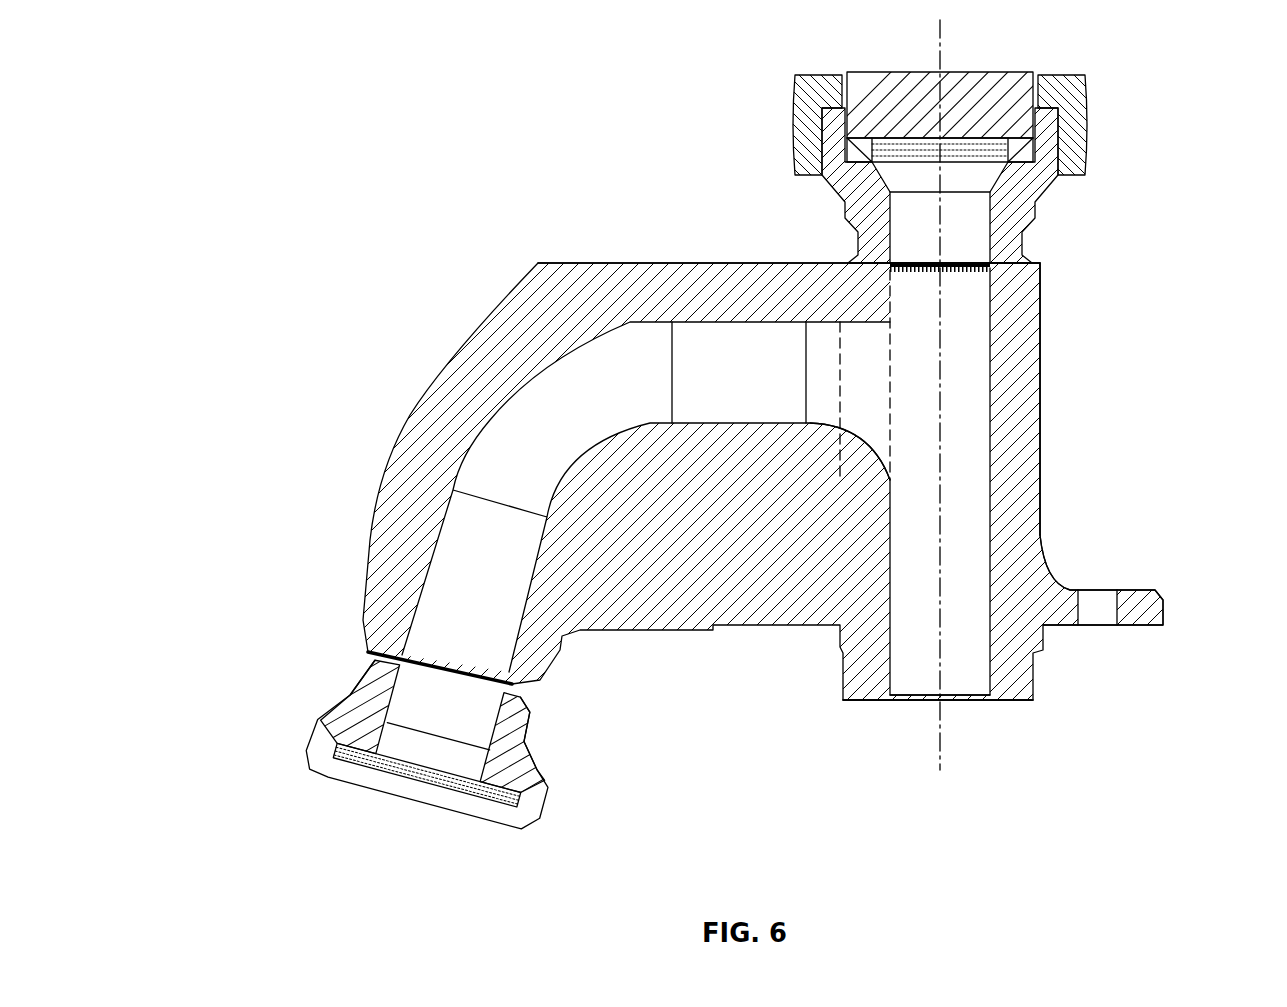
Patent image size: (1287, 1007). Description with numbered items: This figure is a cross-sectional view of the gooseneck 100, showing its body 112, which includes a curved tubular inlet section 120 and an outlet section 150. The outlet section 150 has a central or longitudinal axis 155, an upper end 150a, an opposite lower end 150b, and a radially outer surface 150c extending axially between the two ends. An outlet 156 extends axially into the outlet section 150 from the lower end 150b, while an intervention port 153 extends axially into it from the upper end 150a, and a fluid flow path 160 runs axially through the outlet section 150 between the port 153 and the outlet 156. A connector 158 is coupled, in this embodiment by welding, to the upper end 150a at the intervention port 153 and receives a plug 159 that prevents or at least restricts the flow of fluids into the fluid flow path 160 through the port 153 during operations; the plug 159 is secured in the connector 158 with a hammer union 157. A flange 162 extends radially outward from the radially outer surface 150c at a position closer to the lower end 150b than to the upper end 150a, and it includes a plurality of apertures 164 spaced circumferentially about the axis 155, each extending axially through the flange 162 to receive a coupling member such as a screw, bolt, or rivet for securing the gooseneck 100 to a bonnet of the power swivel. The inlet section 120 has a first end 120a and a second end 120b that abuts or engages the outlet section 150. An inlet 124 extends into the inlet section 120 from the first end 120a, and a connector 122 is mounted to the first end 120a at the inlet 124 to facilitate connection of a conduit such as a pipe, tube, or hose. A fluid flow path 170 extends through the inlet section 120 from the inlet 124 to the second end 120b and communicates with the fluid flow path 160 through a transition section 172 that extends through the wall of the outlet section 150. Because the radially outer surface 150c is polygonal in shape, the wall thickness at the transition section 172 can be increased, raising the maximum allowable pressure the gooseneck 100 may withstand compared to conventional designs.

The gooseneck 100 is at (296, 60).
The body 112 is at (454, 285).
The inlet section 120 is at (366, 444).
The first end 120a is at (392, 658).
The second end 120b is at (824, 261).
The connector 122 is at (530, 735).
The inlet 124 is at (452, 691).
The outlet section 150 is at (1064, 421).
The upper end 150a is at (1036, 260).
The lower end 150b is at (1022, 710).
The radially outer surface 150c is at (1042, 308).
The intervention port 153 is at (904, 258).
The longitudinal axis 155 is at (939, 736).
The outlet 156 is at (909, 708).
The hammer union 157 is at (1088, 100).
The connector 158 is at (1040, 200).
The plug 159 is at (975, 85).
The fluid flow path 160 is at (970, 494).
The flange 162 is at (1165, 605).
The aperture 164 is at (1095, 612).
The fluid flow path 170 is at (620, 364).
The transition section 172 is at (865, 424).